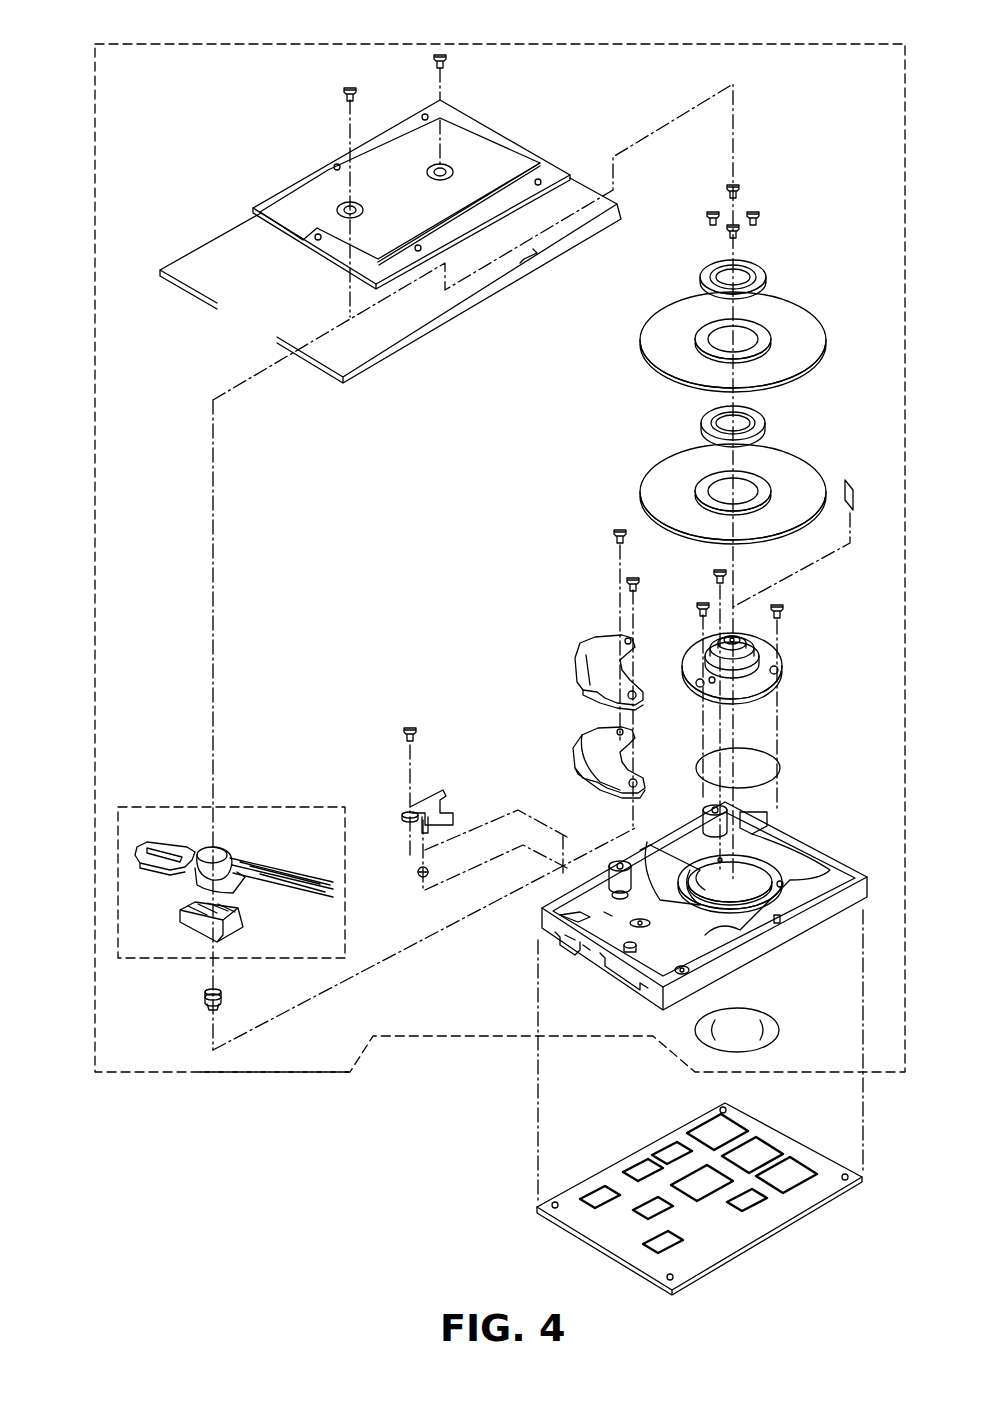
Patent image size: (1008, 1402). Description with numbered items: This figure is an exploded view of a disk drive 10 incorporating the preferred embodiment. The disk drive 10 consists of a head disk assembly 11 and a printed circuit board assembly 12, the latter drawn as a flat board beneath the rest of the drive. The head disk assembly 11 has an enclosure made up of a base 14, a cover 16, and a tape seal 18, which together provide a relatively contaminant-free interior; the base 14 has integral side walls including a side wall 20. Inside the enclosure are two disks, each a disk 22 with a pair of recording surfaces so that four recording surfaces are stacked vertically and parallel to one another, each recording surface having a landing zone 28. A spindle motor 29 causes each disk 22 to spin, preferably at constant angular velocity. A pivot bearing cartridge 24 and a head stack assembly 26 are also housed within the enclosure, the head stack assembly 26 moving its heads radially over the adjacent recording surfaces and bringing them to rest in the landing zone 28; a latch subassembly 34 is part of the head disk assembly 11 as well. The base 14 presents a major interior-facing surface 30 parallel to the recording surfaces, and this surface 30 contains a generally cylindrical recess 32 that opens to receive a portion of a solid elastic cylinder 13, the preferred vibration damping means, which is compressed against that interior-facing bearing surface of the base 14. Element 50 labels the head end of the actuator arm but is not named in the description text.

The disk drive 10 is at (118, 28).
The head disk assembly 11 is at (255, 1073).
The printed circuit board assembly 12 is at (783, 1230).
The solid elastic cylinder 13 is at (418, 875).
The base 14 is at (863, 890).
The cover 16 is at (475, 140).
The tape seal 18 is at (192, 244).
The side wall 20 is at (587, 947).
The disk 22 is at (640, 367).
The pivot bearing cartridge 24 is at (203, 990).
The head stack assembly 26 is at (240, 807).
The landing zone 28 is at (697, 330).
The spindle motor 29 is at (785, 662).
The major interior-facing surface 30 is at (608, 913).
The generally cylindrical recess 32 is at (575, 937).
The latch subassembly 34 is at (403, 776).
The actuator arm head 50 is at (140, 847).